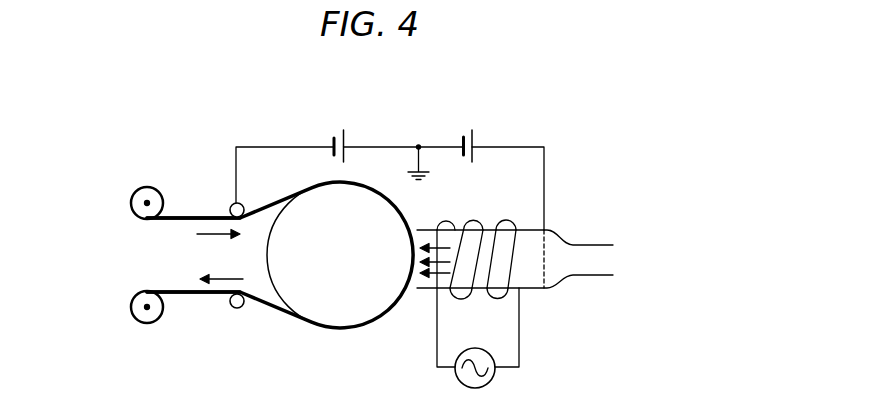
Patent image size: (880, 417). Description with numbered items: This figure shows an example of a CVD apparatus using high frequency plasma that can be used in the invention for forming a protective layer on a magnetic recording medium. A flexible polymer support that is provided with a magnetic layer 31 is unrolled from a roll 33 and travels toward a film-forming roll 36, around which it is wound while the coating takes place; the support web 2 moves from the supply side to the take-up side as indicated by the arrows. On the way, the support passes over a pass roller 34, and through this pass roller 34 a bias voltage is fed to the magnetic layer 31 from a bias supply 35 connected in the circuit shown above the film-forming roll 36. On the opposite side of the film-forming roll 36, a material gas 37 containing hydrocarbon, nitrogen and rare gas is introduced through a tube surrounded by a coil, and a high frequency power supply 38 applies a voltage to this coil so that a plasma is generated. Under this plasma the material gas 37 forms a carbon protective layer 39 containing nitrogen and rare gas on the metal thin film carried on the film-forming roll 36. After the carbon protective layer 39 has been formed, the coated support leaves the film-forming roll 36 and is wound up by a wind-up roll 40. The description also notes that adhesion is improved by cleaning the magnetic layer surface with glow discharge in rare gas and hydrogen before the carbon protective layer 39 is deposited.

The substrate web 2 is at (168, 220).
The magnetic layer 31 is at (190, 215).
The roll 33 is at (131, 203).
The pass roller 34 is at (243, 204).
The bias supply 35 is at (337, 137).
The film-forming roll 36 is at (342, 323).
The material gas 37 is at (590, 263).
The high frequency power supply 38 is at (493, 378).
The carbon protective layer 39 is at (398, 303).
The wind-up roll 40 is at (131, 307).